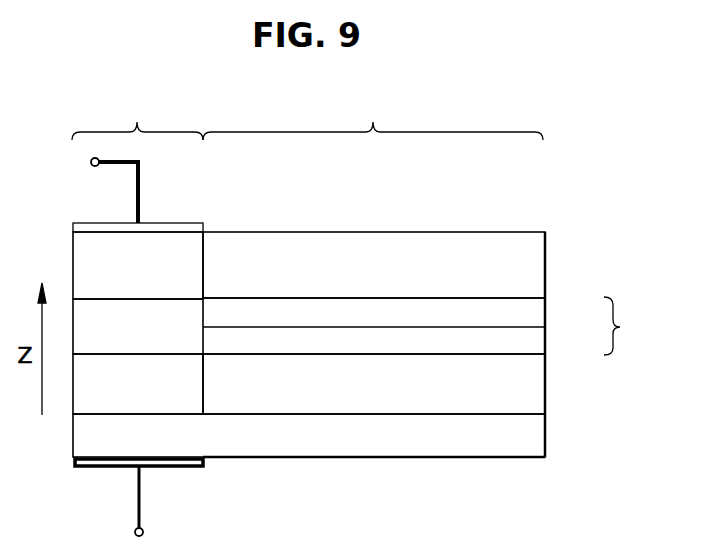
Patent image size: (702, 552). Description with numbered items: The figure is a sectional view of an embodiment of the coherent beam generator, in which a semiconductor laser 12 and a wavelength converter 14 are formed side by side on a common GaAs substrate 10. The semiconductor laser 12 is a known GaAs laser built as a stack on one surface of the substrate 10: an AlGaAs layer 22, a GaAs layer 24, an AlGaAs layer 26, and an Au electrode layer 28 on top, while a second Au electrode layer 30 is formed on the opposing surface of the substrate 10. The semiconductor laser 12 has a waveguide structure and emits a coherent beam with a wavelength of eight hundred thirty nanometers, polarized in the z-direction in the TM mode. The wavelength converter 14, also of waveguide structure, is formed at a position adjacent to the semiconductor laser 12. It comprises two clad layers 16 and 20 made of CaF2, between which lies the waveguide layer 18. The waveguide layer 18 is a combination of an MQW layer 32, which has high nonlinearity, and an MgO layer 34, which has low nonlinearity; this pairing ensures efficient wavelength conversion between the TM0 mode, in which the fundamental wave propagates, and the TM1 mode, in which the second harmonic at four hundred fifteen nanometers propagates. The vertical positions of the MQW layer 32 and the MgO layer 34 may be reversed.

The GaAs substrate 10 is at (445, 448).
The semiconductor laser 12 is at (137, 117).
The wavelength converter 14 is at (373, 117).
The clad layer 16 is at (540, 390).
The waveguide layer 18 is at (427, 326).
The clad layer 20 is at (368, 240).
The AlGaAs layer 22 is at (148, 398).
The GaAs layer 24 is at (148, 339).
The AlGaAs layer 26 is at (148, 281).
The Au electrode layer 28 is at (173, 225).
The Au electrode layer 30 is at (175, 463).
The MQW layer 32 is at (540, 338).
The MgO layer 34 is at (540, 308).